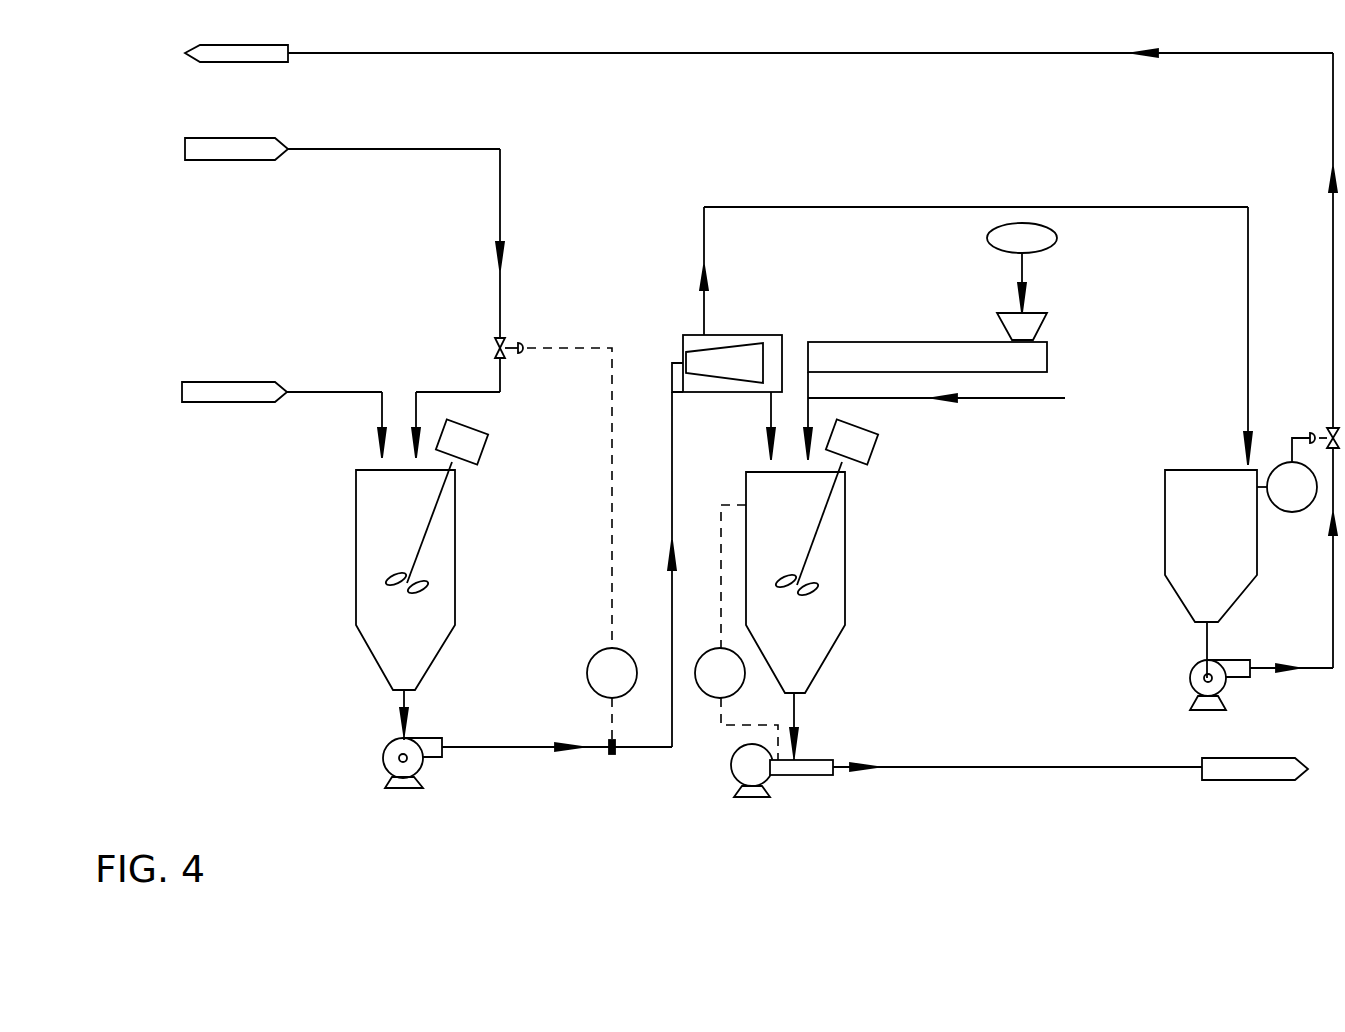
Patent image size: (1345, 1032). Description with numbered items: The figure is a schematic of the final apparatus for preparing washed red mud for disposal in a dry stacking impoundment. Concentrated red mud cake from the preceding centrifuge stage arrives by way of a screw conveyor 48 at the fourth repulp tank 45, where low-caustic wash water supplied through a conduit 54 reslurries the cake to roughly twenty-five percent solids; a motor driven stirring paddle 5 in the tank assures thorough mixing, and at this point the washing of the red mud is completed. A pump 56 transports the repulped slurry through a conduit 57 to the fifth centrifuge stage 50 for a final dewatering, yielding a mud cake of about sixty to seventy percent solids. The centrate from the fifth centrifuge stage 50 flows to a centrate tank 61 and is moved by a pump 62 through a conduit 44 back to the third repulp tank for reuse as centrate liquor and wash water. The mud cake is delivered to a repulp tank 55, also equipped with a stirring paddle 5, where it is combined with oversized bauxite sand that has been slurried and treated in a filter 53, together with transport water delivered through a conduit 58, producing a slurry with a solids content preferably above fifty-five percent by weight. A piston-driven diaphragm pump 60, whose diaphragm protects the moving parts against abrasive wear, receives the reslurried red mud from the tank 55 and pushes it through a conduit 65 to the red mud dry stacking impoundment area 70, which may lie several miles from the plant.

The conduit 44 is at (935, 53).
The conduit 54 is at (500, 149).
The screw conveyor 48 is at (333, 392).
The repulp tank 45 is at (365, 642).
The motor driven stirring paddle 5 is at (419, 514).
The pump 56 is at (390, 787).
The conduit 57 is at (513, 747).
The fifth centrifuge stage 50 is at (683, 335).
The filter 53 is at (1047, 342).
The conduit 58 is at (995, 398).
The repulp tank 55 is at (845, 560).
The piston-driven diaphragm pump 60 is at (743, 797).
The conduit 65 is at (1018, 767).
The red mud dry stacking impoundment area 70 is at (1248, 853).
The centrate tank 61 is at (1173, 587).
The pump 62 is at (1190, 688).